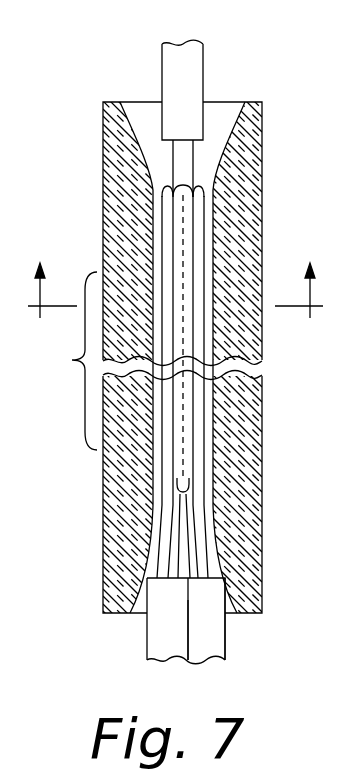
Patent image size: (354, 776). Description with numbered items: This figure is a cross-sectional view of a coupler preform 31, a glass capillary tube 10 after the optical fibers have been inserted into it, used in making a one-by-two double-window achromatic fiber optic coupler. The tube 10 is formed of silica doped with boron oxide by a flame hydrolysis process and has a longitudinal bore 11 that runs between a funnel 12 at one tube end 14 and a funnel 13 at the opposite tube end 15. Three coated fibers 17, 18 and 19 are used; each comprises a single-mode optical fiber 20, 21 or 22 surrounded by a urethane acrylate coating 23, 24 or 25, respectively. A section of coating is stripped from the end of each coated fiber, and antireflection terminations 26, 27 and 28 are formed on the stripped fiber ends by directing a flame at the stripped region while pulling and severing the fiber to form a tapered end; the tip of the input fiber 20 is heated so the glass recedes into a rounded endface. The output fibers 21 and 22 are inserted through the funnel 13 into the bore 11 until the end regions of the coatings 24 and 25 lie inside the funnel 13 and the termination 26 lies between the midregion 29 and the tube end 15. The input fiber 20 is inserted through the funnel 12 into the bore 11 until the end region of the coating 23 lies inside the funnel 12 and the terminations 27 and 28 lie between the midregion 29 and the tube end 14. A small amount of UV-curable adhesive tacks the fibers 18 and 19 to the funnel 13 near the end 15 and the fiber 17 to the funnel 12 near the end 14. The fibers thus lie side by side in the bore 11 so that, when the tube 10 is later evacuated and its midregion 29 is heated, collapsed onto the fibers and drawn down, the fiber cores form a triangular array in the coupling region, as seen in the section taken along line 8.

The section line 8- 8 is at (175, 277).
The glass capillary tube 10 is at (262, 120).
The bore 11 is at (208, 252).
The funnel 12 is at (230, 113).
The funnel 13 is at (236, 612).
The tube end 14 is at (120, 100).
The tube end 15 is at (147, 616).
The coated fiber 17 is at (162, 52).
The coated fiber 18 is at (147, 642).
The coated fiber 19 is at (227, 643).
The input fiber 20 is at (188, 280).
The output fiber 21 is at (160, 283).
The output fiber 22 is at (212, 338).
The coating 23 is at (195, 60).
The coating 24 is at (152, 652).
The coating 25 is at (212, 652).
The antireflection termination 26 is at (208, 514).
The antireflection termination 27 is at (153, 190).
The antireflection termination 28 is at (210, 190).
The midregion 29 is at (63, 361).
The coupler preform 31 is at (103, 143).